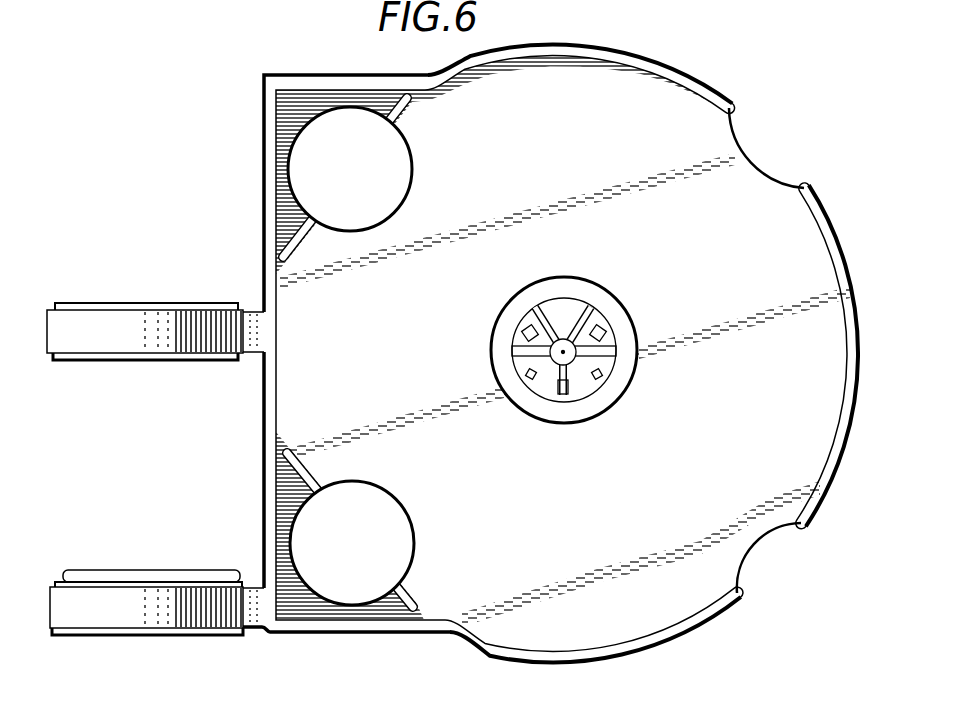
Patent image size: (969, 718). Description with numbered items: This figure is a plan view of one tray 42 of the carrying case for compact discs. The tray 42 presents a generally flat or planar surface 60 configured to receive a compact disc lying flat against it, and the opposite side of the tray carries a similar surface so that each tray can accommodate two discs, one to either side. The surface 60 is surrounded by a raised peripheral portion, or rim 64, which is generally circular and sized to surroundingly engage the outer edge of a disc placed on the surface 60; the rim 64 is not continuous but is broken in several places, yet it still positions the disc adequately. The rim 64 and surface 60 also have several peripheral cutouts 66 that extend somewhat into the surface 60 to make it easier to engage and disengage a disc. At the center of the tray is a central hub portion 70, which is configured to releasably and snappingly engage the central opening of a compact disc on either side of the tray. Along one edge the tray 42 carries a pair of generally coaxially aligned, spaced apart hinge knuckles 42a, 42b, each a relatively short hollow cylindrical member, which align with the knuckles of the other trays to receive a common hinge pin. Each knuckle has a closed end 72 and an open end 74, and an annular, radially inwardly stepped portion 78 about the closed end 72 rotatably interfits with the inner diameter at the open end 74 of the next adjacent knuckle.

The tray 42 is at (670, 642).
The hinge knuckle 42a is at (107, 635).
The hinge knuckle 42b is at (163, 361).
The planar surface 60 is at (580, 534).
The raised peripheral portion 64 is at (663, 63).
The peripheral cutouts 66 is at (292, 186).
The central hub portion 70 is at (608, 327).
The closed end 72 is at (172, 570).
The open end 74 is at (210, 646).
The stepped portion 78 is at (56, 582).